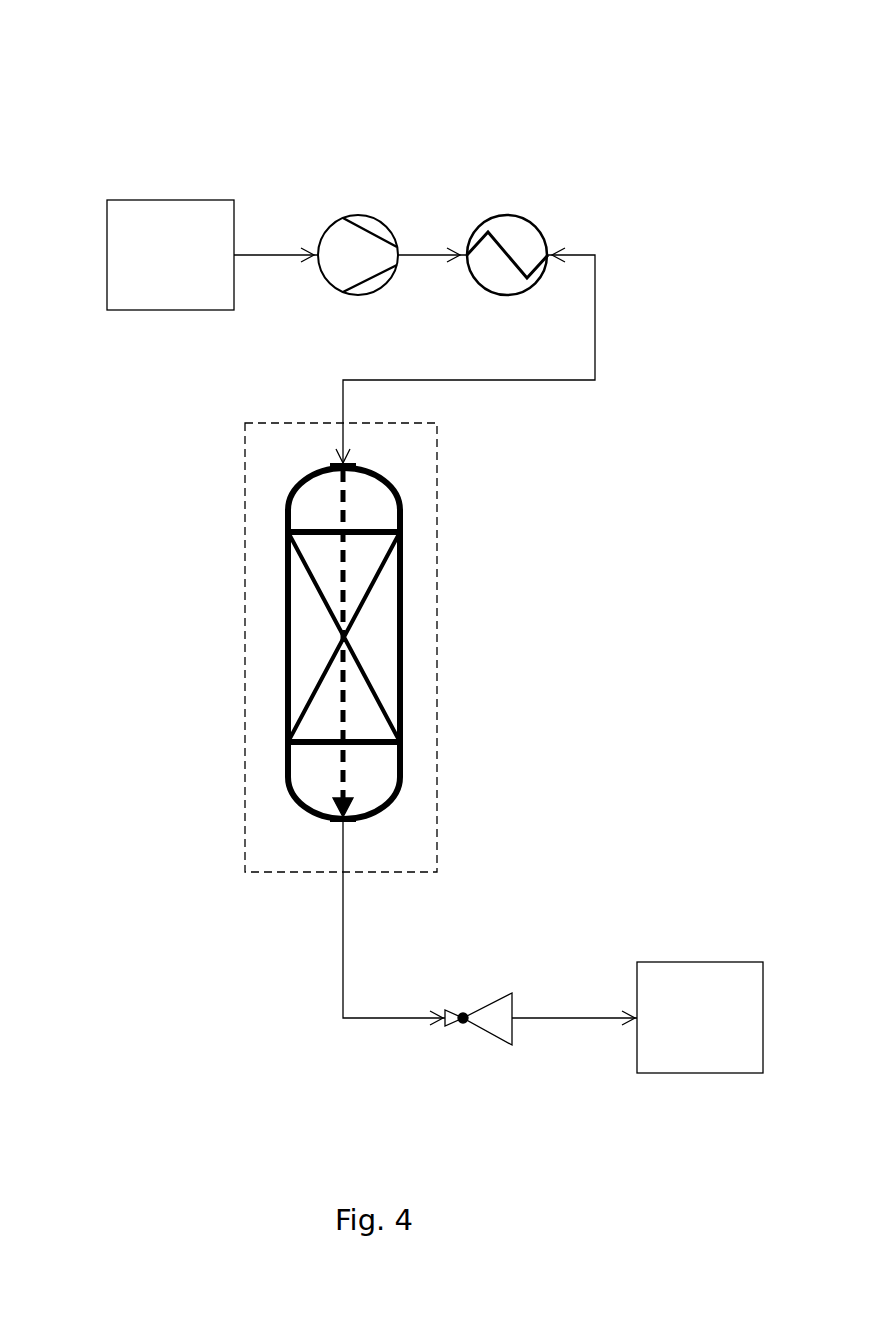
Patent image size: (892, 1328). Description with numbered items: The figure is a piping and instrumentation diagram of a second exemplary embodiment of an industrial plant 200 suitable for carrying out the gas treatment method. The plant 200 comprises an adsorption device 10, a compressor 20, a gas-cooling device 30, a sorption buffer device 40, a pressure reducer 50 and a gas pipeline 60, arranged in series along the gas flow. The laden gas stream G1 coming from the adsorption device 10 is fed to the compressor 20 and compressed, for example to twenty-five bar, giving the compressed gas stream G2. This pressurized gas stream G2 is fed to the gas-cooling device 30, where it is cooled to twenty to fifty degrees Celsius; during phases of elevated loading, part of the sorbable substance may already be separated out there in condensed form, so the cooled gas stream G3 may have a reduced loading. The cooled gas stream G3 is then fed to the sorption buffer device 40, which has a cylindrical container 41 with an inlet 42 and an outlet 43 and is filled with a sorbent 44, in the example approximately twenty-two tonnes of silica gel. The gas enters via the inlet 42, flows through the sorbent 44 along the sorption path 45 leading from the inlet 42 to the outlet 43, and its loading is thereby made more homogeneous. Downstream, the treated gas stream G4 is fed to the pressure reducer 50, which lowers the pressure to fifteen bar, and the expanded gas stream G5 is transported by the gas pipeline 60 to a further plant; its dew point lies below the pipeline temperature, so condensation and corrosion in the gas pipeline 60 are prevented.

The industrial plant 200 is at (673, 105).
The adsorption device 10 is at (163, 200).
The compressor 20 is at (353, 215).
The gas-cooling device 30 is at (503, 215).
The sorption buffer device 40 is at (245, 630).
The container 41 is at (405, 513).
The inlet 42 is at (345, 463).
The outlet 43 is at (350, 823).
The sorbent 44 is at (383, 617).
The sorption path 45 is at (347, 717).
The pressure reducer 50 is at (473, 1005).
The gas pipeline 60 is at (680, 962).
The laden gas stream G1 is at (262, 255).
The compressed gas stream G2 is at (427, 255).
The cooled gas stream G3 is at (578, 255).
The treated gas stream G4 is at (393, 1018).
The expanded gas stream G5 is at (583, 1018).